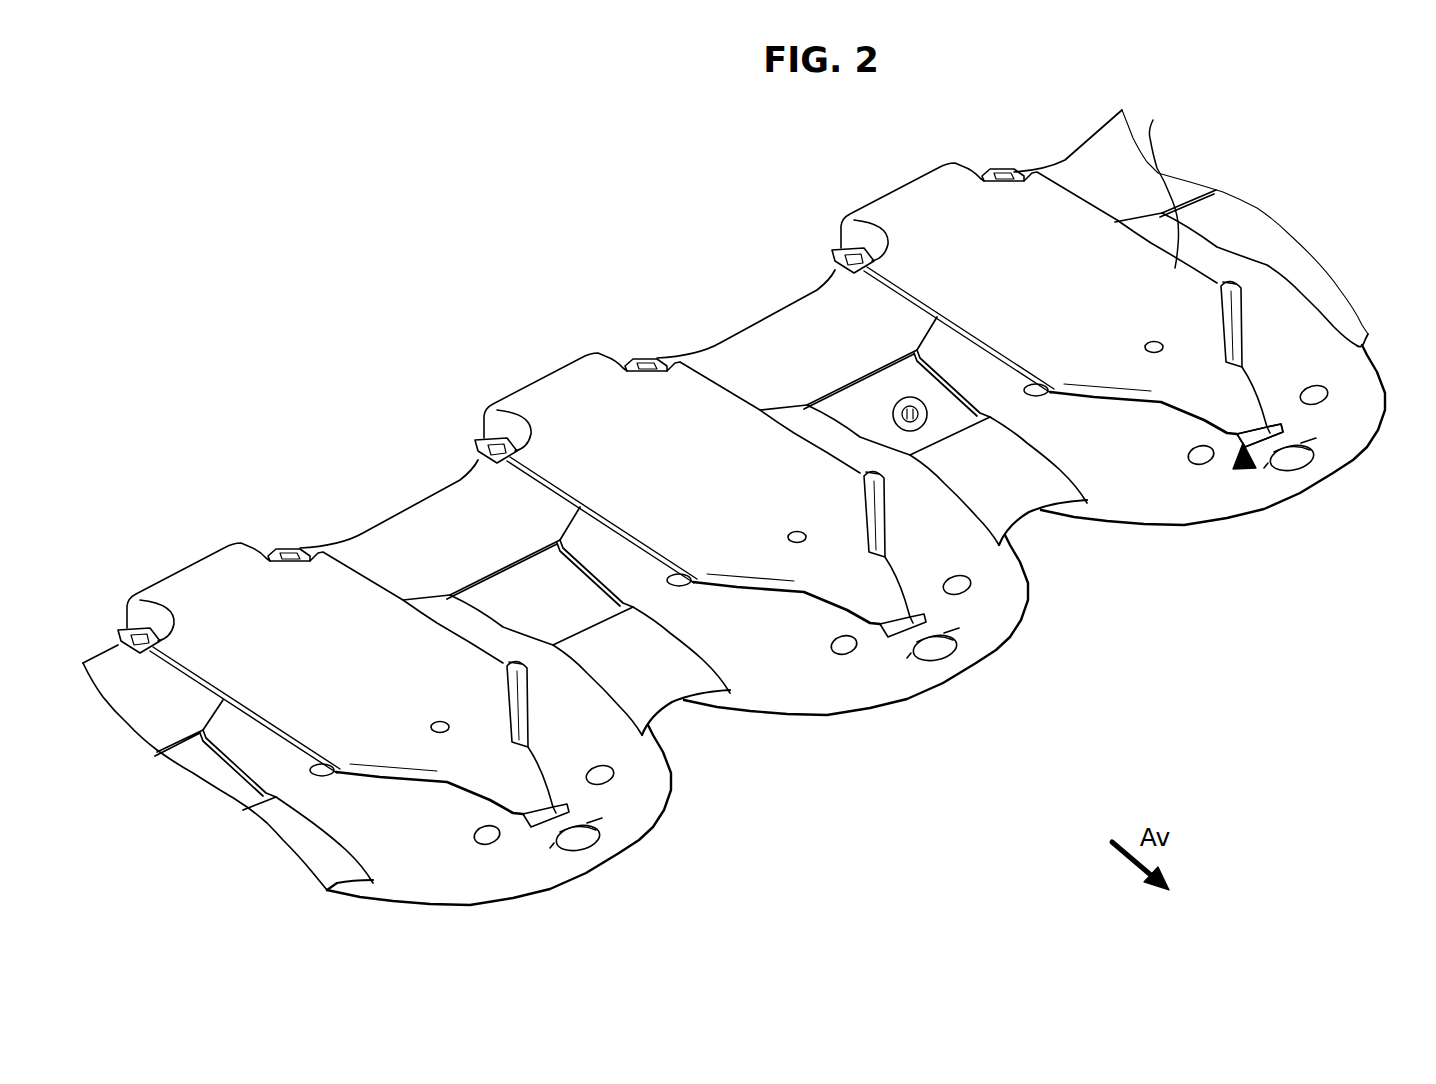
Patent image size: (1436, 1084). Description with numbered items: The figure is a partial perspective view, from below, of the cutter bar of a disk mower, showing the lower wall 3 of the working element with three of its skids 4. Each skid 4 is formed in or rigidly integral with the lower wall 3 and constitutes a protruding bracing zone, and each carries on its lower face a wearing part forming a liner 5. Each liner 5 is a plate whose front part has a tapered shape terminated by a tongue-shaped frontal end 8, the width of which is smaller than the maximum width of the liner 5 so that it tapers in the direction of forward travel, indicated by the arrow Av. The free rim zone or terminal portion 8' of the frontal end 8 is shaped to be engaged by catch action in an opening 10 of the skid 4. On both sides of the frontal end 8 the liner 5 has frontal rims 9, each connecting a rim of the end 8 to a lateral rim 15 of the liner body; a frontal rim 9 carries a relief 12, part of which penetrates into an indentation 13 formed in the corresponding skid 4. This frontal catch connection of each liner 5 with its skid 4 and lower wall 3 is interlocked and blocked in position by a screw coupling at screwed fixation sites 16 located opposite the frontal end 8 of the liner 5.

The lower wall 3 is at (423, 540).
The skid 4 is at (1343, 440).
The liner 5 is at (302, 580).
The frontal end 8 is at (971, 519).
The terminal portion 8' is at (1260, 487).
The frontal rim 9 is at (518, 717).
The opening 10 is at (1243, 469).
The relief 12 is at (400, 776).
The indentation 13 is at (1237, 297).
The lateral rim 15 is at (980, 297).
The screwed fixation site 16 is at (484, 443).